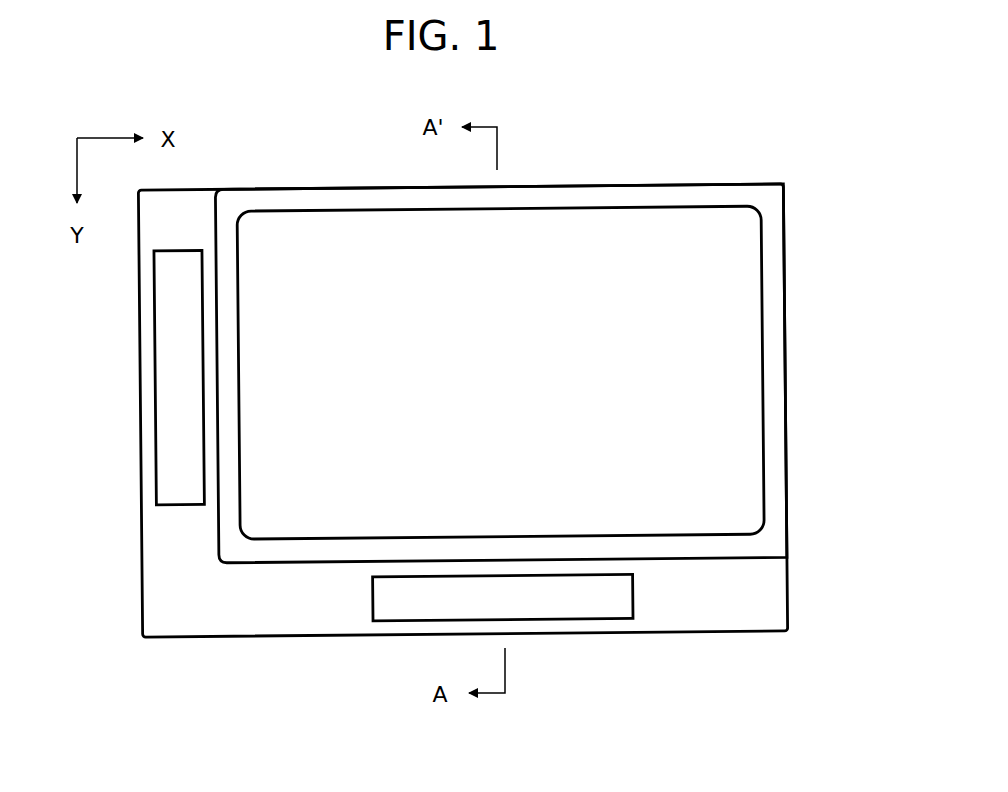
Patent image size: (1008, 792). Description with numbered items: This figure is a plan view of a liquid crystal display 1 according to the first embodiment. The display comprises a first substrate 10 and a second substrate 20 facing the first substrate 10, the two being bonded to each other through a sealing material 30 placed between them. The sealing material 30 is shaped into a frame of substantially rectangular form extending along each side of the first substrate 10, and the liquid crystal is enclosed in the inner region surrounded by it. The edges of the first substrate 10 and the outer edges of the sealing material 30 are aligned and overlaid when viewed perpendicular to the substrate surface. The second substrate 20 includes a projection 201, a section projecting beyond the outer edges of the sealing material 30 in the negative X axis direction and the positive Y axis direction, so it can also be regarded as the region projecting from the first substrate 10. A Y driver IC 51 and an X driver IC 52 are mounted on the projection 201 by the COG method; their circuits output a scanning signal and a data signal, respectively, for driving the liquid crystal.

The liquid crystal display 1 is at (257, 136).
The first substrate 10 is at (786, 331).
The second substrate 20 is at (743, 632).
The sealing material 30 is at (777, 397).
The Y driver IC 51 is at (172, 374).
The X driver IC 52 is at (597, 605).
The projection 201 is at (805, 555).